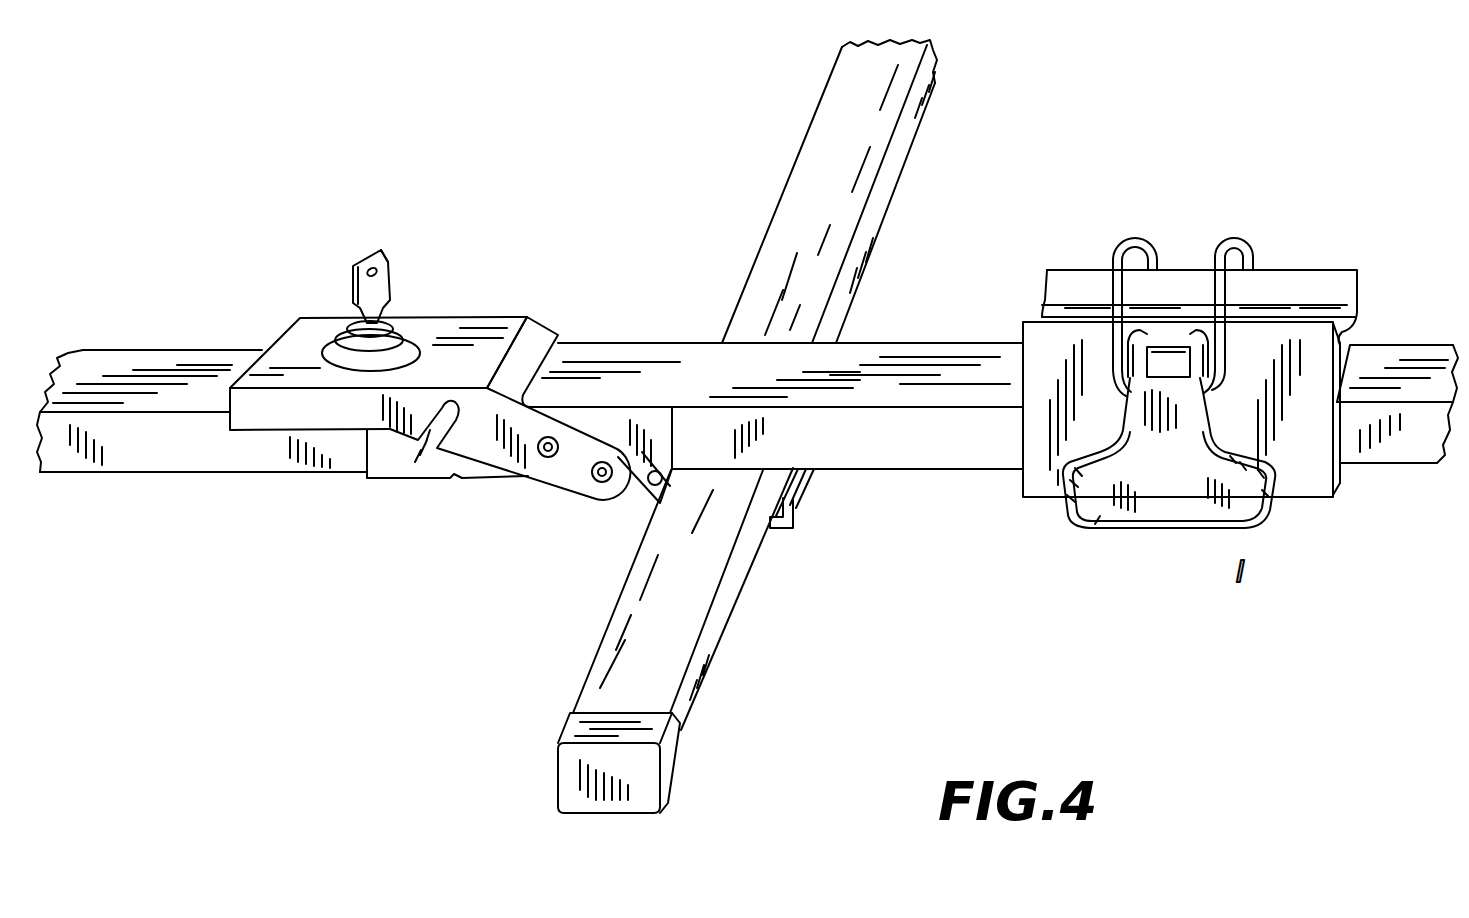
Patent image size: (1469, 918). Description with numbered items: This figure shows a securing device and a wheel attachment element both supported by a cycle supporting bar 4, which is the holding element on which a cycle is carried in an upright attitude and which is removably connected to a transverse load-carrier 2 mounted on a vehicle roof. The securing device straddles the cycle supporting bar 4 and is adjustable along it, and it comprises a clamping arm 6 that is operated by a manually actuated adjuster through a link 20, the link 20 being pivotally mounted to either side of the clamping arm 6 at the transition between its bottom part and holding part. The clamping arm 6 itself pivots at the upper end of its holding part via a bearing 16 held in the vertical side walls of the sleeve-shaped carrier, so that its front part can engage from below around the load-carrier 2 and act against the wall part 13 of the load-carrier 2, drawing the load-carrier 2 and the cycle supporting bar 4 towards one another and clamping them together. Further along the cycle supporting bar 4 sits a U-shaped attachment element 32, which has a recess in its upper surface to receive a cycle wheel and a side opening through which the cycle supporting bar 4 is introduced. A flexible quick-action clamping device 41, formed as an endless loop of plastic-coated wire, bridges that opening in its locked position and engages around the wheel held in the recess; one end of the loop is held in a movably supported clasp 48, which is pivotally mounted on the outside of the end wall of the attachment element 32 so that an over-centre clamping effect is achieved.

The load-carrier 2 is at (604, 636).
The cycle supporting bar 4 is at (937, 344).
The clamping arm 6 is at (785, 527).
The wall part 13 is at (733, 596).
The bearing 16 is at (805, 489).
The link 20 is at (643, 507).
The attachment element 32 is at (1077, 268).
The quick-action clamping device 41 is at (1242, 237).
The clasp 48 is at (1187, 510).